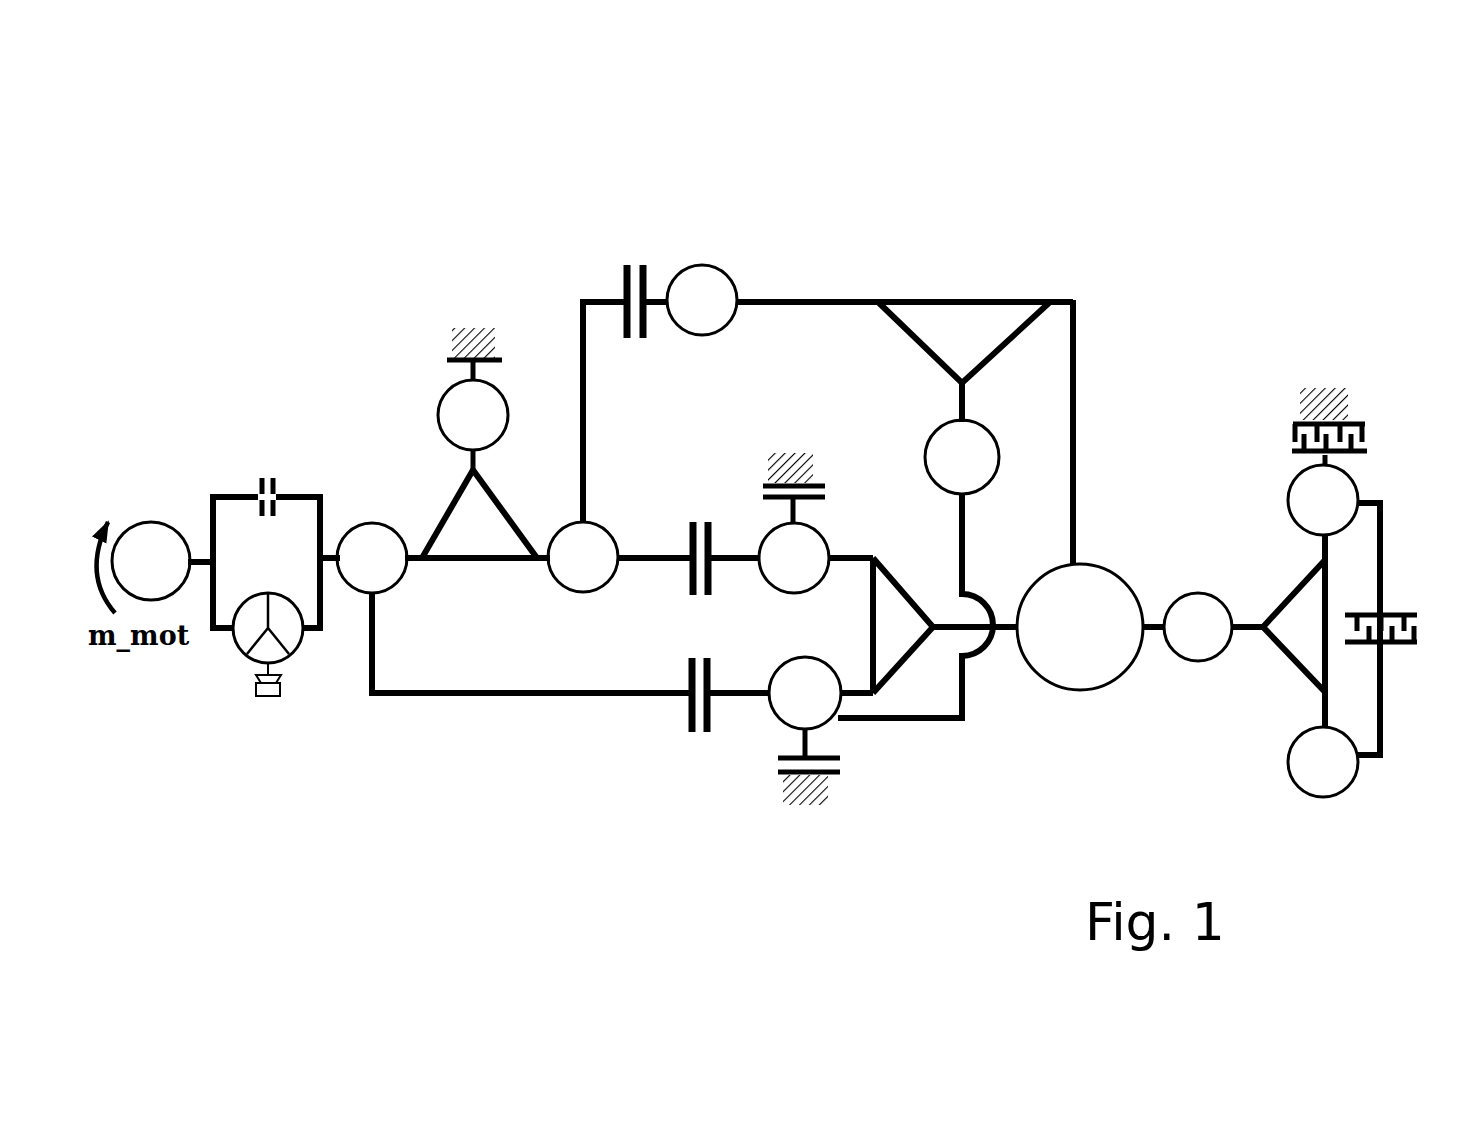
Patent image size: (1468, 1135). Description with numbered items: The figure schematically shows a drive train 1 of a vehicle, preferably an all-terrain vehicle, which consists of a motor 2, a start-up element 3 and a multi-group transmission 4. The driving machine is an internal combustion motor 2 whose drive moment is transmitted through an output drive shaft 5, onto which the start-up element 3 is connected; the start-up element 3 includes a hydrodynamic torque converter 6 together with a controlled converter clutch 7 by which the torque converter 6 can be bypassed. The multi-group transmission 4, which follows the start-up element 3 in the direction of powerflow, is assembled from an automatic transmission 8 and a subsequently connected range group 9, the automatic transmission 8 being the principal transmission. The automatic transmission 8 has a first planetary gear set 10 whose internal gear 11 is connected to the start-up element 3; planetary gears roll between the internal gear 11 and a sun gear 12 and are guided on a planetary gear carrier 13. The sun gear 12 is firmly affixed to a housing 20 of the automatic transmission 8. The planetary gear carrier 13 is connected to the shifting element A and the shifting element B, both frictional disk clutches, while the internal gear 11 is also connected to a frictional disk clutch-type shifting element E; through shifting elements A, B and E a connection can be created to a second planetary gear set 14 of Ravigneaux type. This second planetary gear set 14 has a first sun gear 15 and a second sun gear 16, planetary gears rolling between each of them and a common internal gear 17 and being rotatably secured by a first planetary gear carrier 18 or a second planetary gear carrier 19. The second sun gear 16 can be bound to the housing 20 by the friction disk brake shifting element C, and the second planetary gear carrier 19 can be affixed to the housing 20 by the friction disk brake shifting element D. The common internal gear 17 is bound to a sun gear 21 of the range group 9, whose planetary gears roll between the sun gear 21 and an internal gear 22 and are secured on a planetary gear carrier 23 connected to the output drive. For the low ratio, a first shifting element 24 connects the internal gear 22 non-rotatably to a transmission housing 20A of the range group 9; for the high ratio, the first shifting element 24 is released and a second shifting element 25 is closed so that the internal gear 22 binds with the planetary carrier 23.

The drive train 1 is at (235, 285).
The motor 2 is at (150, 560).
The start-up element 3 is at (256, 447).
The multi-group transmission 4 is at (468, 283).
The output drive shaft 5 is at (201, 536).
The hydrodynamic torque converter 6 is at (250, 636).
The converter clutch 7 is at (273, 480).
The automatic transmission 8 is at (808, 298).
The range group 9 is at (1307, 570).
The first planetary gear set 10 is at (470, 590).
The internal gear 11 is at (382, 540).
The sun gear 12 is at (497, 412).
The planetary gear carrier 13 is at (595, 548).
The second planetary gear set 14 is at (1090, 432).
The first sun gear 15 is at (708, 295).
The second sun gear 16 is at (810, 548).
The common internal gear 17 is at (1086, 627).
The first planetary gear carrier 18 is at (970, 455).
The second planetary gear carrier 19 is at (800, 693).
The housing 20 is at (455, 330).
The transmission housing 20A is at (1315, 390).
The sun gear 21 is at (1200, 625).
The internal gear 22 is at (1332, 492).
The planetary gear carrier 23 is at (1314, 783).
The first shifting element 24 is at (1362, 423).
The second shifting element 25 is at (1405, 604).
The shifting element A is at (640, 268).
The shifting element B is at (705, 525).
The shifting element C is at (825, 485).
The shifting element D is at (840, 775).
The shifting element E is at (688, 715).